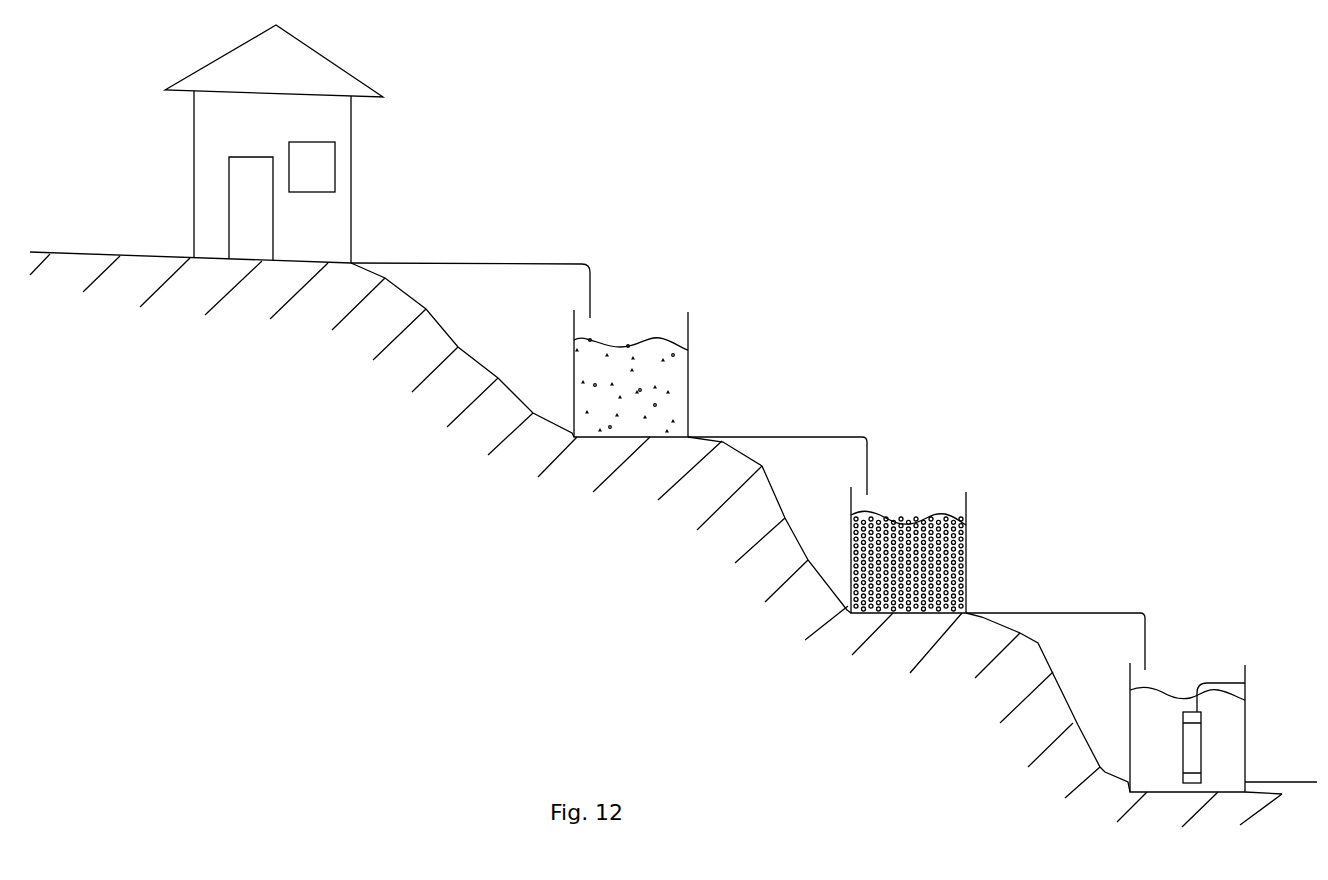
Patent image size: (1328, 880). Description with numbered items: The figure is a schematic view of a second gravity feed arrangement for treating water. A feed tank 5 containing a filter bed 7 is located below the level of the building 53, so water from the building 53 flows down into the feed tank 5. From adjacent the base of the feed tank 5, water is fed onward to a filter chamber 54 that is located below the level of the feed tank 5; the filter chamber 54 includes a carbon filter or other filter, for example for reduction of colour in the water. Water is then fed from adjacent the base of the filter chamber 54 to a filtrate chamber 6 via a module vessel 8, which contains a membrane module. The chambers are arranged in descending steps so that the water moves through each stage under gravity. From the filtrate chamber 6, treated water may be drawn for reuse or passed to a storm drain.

The building 53 is at (353, 148).
The feed tank 5 is at (688, 335).
The filter bed 7 is at (677, 403).
The filter chamber 54 is at (966, 512).
The filtrate chamber 6 is at (1130, 668).
The module vessel 8 is at (1200, 756).